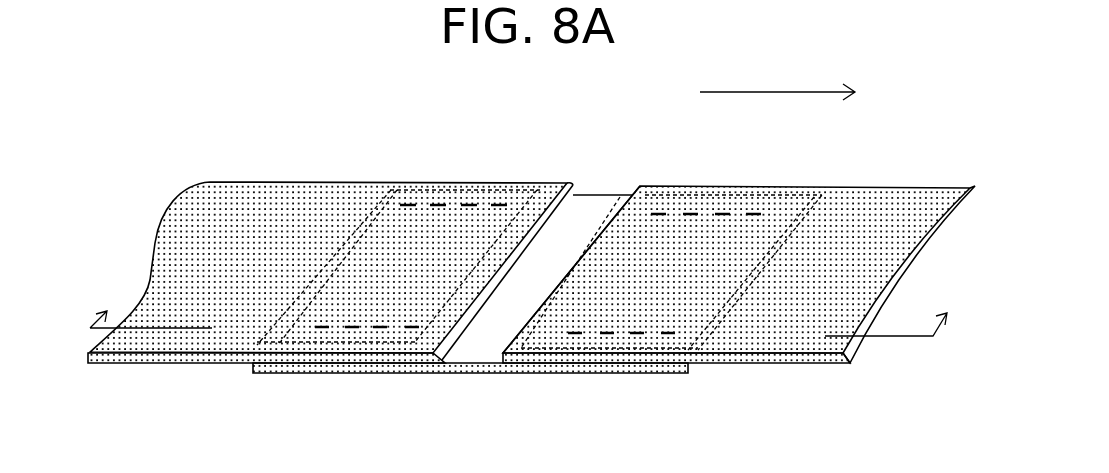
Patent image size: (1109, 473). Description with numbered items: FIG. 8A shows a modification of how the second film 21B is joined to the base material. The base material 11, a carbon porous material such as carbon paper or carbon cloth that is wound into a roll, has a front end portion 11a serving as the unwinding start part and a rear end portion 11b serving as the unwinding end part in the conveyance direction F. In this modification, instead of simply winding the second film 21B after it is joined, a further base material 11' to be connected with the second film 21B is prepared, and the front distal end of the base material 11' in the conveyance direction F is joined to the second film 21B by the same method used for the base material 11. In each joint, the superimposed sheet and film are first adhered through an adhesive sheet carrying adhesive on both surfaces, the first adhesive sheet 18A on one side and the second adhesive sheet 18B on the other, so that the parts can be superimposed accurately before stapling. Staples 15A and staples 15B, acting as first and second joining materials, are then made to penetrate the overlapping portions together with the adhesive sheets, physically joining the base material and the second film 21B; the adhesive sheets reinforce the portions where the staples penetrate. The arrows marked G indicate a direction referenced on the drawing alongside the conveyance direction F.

The base material 11 is at (739, 248).
The base material 11' is at (327, 246).
The front end portion 11a is at (547, 183).
The rear end portion 11b is at (641, 186).
The staples 15A is at (407, 204).
The staples 15B is at (659, 213).
The first adhesive sheet 18A is at (362, 184).
The second adhesive sheet 18B is at (783, 187).
The second film 21B is at (470, 370).
The conveyance direction F is at (777, 80).
The gap direction G is at (526, 308).